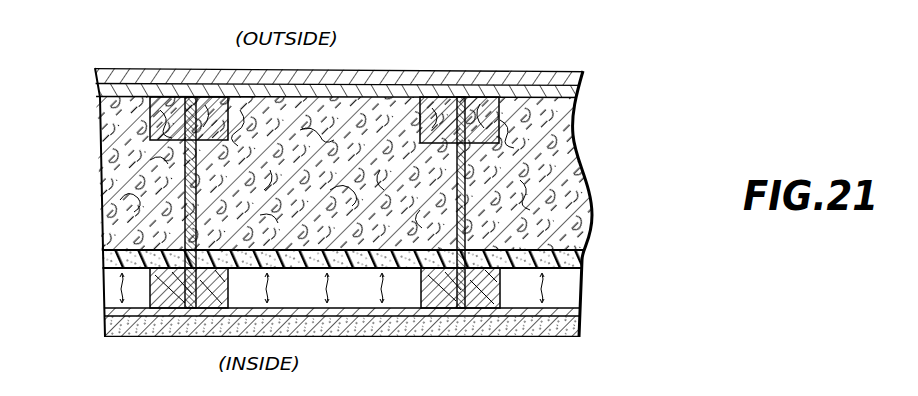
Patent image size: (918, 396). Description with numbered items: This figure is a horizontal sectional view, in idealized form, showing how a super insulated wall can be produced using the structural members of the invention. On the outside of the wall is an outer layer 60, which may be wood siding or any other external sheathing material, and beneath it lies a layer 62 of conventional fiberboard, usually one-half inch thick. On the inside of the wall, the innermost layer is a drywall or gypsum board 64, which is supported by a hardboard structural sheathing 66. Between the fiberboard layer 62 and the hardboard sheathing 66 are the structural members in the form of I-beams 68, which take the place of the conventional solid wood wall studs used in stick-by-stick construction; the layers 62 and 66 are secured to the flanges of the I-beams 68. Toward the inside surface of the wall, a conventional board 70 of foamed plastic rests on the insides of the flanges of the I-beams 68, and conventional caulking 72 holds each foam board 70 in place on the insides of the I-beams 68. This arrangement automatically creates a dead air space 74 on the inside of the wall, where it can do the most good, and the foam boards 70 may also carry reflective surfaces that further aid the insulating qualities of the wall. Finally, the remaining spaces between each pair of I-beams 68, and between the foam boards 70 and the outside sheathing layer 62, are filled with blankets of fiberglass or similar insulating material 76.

The outer layer 60 is at (567, 71).
The layer of fiberboard 62 is at (577, 91).
The gypsum board 64 is at (553, 336).
The hardboard structural sheathing 66 is at (575, 313).
The I-beams 68 is at (184, 147).
The board of foamed plastic 70 is at (568, 260).
The caulking 72 is at (173, 252).
The dead air space 74 is at (403, 298).
The insulating material 76 is at (372, 108).